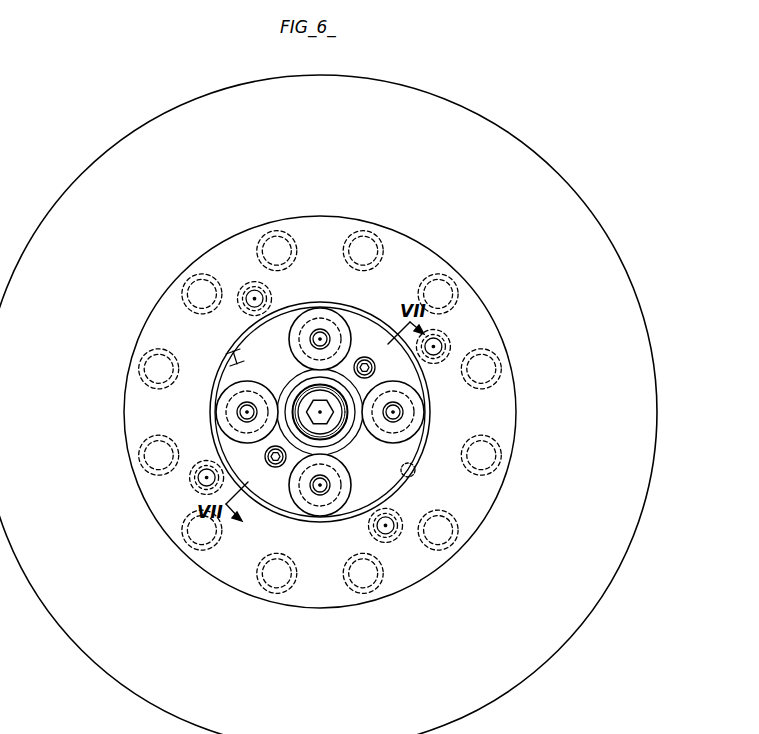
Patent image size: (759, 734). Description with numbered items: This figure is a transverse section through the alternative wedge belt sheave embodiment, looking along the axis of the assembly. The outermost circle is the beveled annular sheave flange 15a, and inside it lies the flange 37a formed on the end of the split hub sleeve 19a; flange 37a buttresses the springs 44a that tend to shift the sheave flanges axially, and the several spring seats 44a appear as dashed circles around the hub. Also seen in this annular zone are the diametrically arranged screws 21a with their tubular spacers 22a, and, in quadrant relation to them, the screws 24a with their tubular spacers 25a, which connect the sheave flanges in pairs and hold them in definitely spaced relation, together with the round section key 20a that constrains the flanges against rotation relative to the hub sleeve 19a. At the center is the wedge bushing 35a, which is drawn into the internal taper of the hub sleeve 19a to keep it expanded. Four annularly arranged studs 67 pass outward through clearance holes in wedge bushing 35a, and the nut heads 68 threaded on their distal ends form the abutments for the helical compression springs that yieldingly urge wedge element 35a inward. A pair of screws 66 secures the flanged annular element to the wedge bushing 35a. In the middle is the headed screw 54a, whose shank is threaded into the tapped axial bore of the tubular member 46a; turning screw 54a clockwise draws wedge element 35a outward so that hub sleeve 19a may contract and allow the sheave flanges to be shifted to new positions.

The sheave flange 15a is at (470, 124).
The flange 37a is at (418, 258).
The split hub sleeve 19a is at (233, 338).
The wedge bushing 35a is at (249, 458).
The headed screw 54a is at (307, 398).
The tubular member 46a is at (343, 431).
The spring 44a is at (348, 222).
The screw 24a is at (253, 280).
The tubular spacer 25a is at (250, 305).
The screw 21a is at (441, 334).
The tubular spacer 22a is at (445, 346).
The key 20a is at (415, 473).
The stud 67 is at (320, 339).
The nut head 68 is at (328, 330).
The screw 66 is at (367, 360).